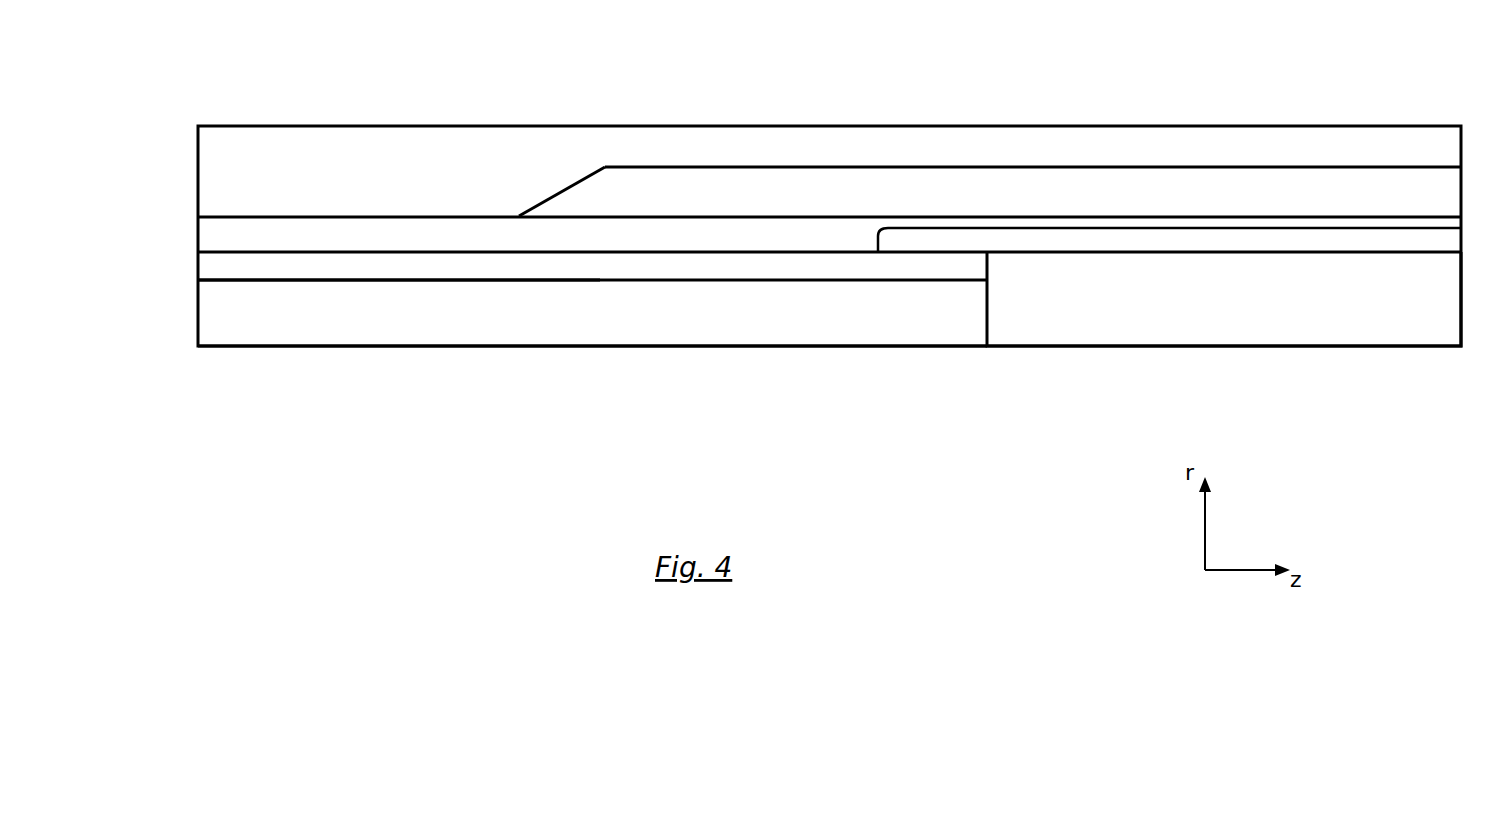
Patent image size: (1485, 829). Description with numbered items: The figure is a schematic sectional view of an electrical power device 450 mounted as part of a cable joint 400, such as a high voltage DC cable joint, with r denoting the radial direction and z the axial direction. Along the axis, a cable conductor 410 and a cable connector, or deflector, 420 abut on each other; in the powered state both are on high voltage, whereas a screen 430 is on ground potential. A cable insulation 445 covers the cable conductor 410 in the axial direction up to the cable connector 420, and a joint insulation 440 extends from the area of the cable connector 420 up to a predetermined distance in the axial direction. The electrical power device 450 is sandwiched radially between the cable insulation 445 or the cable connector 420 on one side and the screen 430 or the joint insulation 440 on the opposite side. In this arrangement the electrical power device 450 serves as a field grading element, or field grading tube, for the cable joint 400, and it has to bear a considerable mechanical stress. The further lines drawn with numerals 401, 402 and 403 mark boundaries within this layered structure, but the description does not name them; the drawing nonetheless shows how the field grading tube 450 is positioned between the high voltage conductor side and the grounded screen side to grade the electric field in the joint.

The cable joint 400 is at (829, 320).
The screen 430 is at (308, 158).
The tapered transition of coating 401 is at (518, 214).
The joint insulation 440 is at (1018, 185).
The electrical power device 450 is at (275, 238).
The cable insulation 445 is at (363, 270).
The core boundary 402 is at (647, 280).
The cable conductor 410 is at (447, 338).
The thin film layer 403 is at (875, 252).
The cable connector 420 is at (1132, 337).